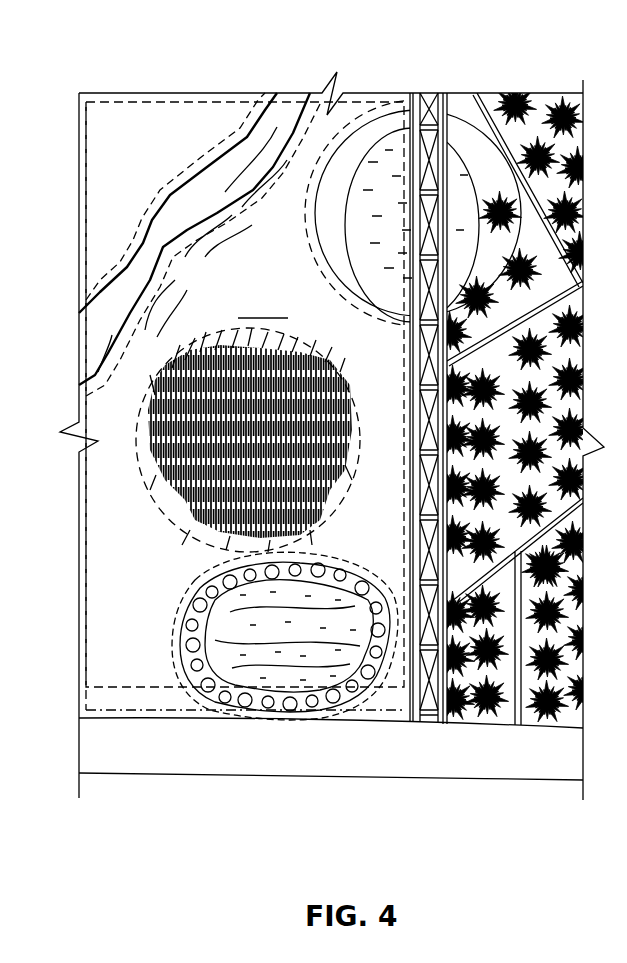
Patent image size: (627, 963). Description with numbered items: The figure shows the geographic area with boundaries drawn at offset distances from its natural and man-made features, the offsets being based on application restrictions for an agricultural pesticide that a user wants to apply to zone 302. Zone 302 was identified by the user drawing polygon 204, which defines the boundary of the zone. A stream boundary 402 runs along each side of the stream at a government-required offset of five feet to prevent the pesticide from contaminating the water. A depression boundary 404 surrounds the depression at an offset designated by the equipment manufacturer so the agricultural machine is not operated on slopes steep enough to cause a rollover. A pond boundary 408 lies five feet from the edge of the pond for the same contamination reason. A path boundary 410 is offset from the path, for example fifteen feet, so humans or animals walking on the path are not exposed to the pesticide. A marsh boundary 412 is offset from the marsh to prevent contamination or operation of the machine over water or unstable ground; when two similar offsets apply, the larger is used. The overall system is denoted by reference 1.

The landscape irrigation system 1 is at (560, 52).
The polygon 204 is at (318, 716).
The zone 302 is at (263, 305).
The stream boundary 402 is at (125, 255).
The depression boundary 404 is at (307, 228).
The pond boundary 408 is at (198, 698).
The path boundary 410 is at (162, 688).
The marsh boundary 412 is at (170, 520).